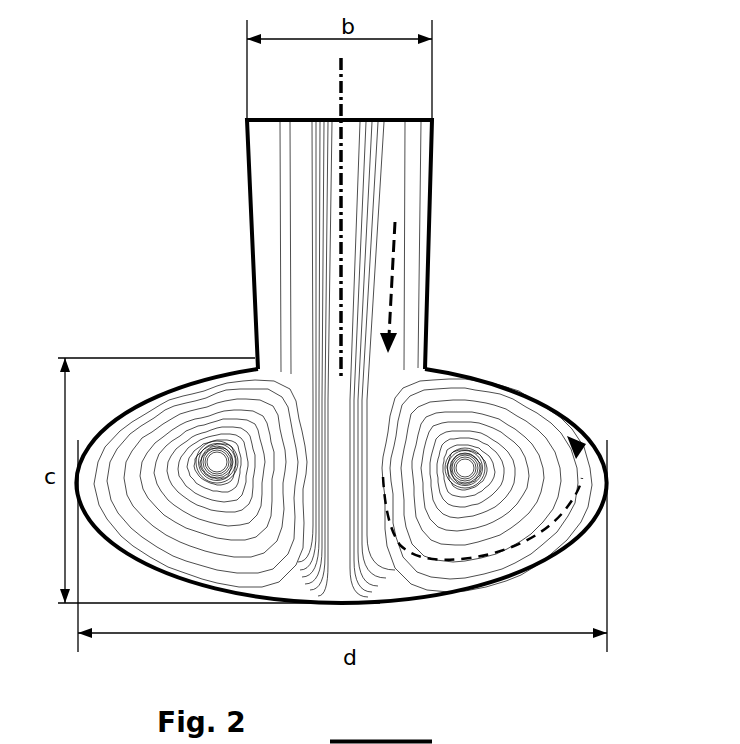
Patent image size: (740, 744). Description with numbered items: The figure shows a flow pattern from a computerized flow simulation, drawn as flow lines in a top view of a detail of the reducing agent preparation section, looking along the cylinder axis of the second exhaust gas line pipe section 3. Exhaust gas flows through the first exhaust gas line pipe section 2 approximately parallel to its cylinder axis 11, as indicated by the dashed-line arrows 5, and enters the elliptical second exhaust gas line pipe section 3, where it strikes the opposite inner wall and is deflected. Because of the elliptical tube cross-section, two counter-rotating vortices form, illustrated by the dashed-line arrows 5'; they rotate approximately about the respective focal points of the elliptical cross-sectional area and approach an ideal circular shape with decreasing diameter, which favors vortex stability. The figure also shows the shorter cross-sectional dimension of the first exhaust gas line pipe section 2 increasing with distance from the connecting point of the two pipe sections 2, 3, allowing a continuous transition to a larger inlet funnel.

The first exhaust gas line pipe section 2 is at (431, 207).
The second exhaust gas line pipe section 3 is at (524, 389).
The dashed-line arrows 5 is at (428, 287).
The dashed-line arrows 5' is at (538, 478).
The cylinder axis 11 is at (344, 91).